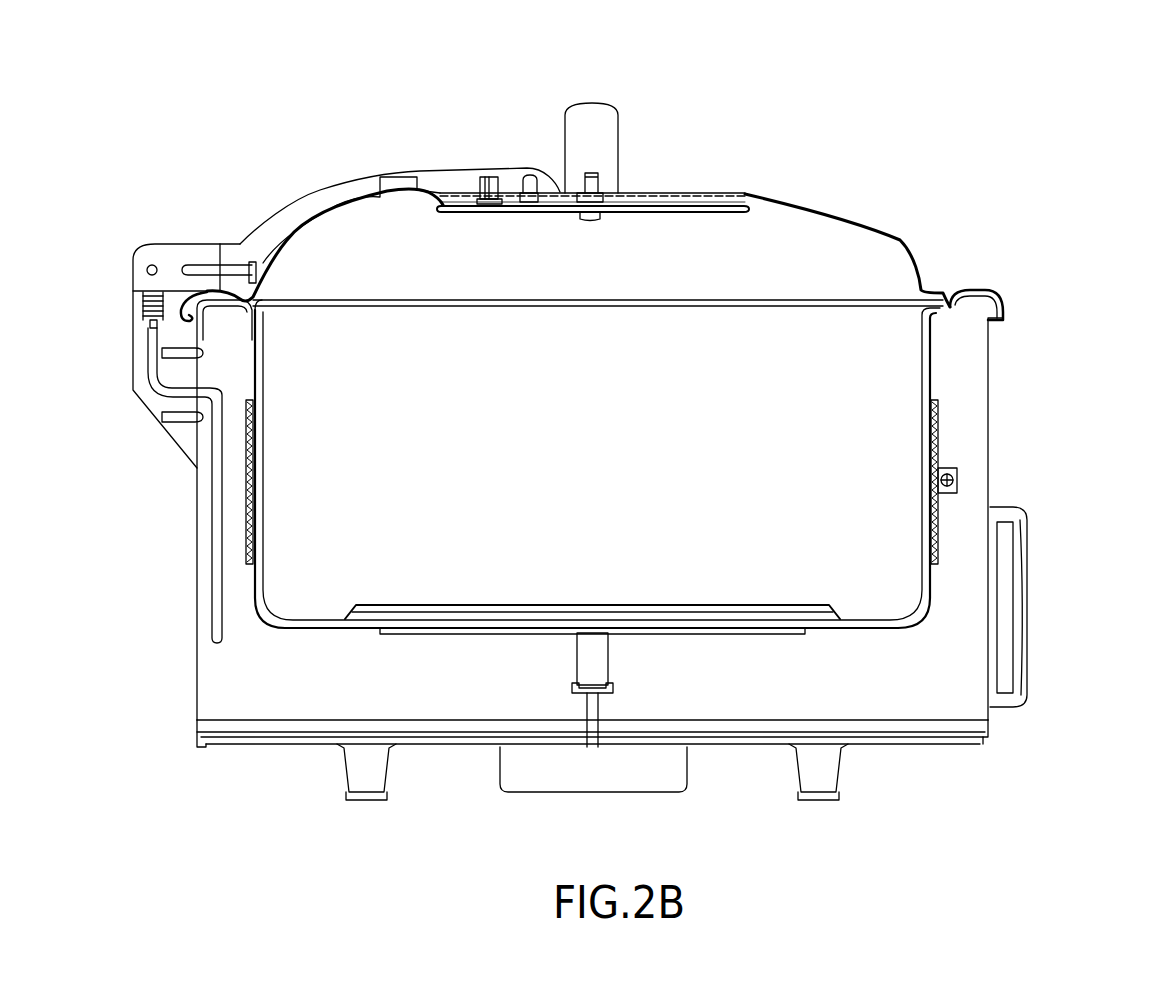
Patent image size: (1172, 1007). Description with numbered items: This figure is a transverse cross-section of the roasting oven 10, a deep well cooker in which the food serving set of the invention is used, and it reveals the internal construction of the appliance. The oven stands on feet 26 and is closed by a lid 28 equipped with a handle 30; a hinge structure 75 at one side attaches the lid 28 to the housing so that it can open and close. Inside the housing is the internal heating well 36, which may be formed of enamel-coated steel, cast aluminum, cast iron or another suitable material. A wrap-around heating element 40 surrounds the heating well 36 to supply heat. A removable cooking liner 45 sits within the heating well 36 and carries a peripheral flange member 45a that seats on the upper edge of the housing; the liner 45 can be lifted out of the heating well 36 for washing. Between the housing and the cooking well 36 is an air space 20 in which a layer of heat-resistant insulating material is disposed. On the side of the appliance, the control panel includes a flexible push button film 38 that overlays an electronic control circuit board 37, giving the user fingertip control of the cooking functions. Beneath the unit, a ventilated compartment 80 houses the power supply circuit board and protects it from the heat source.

The roasting oven 10 is at (857, 187).
The air space 20 is at (885, 677).
The feet 26 is at (360, 782).
The lid 28 is at (898, 240).
The handle 30 is at (567, 108).
The heating well 36 is at (267, 622).
The electronic control circuit board 37 is at (1007, 653).
The push button film 38 is at (1025, 582).
The wrap-around heating element 40 is at (958, 428).
The removable cooking liner 45 is at (262, 583).
The peripheral flange member 45a is at (1006, 313).
The hinge structure 75 is at (236, 240).
The ventilated compartment 80 is at (502, 790).